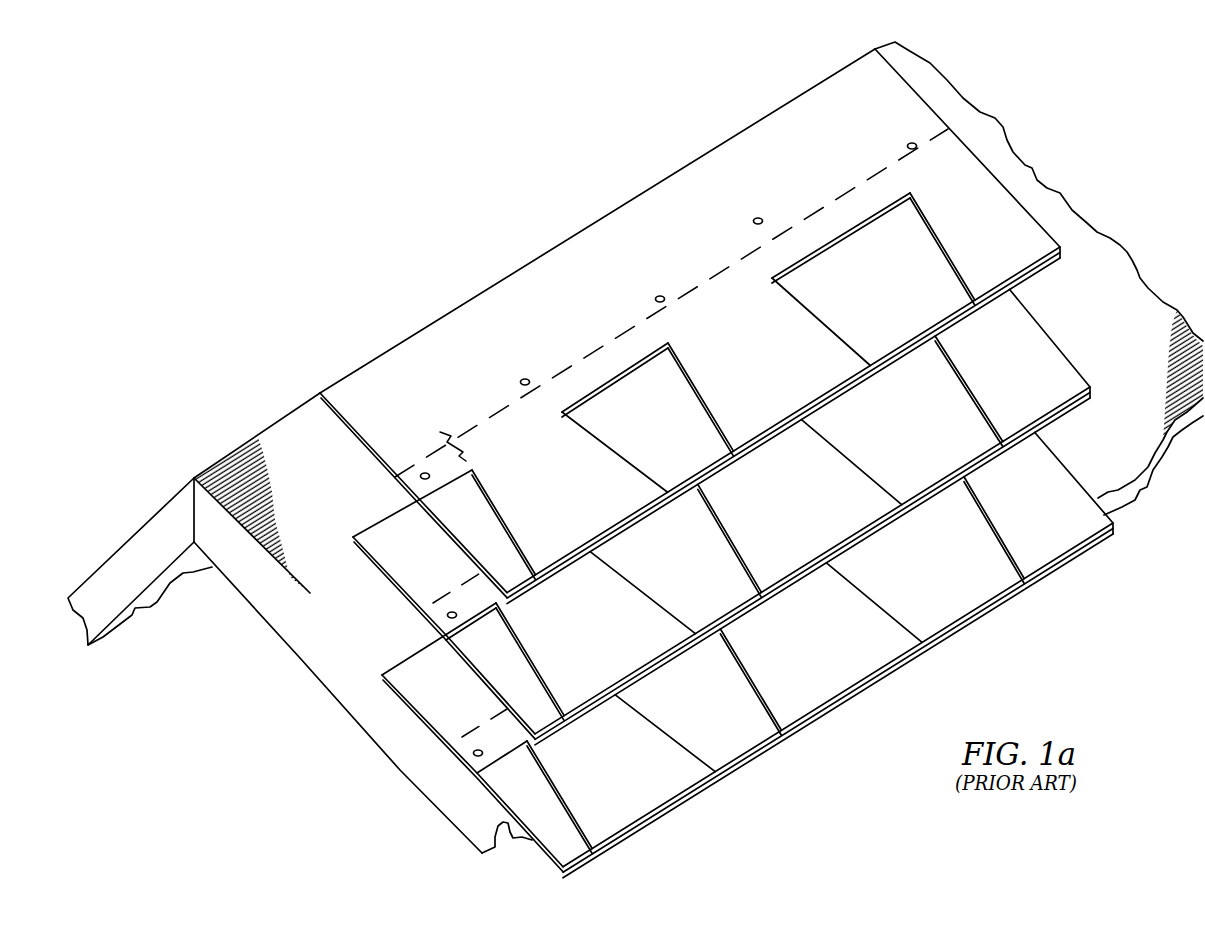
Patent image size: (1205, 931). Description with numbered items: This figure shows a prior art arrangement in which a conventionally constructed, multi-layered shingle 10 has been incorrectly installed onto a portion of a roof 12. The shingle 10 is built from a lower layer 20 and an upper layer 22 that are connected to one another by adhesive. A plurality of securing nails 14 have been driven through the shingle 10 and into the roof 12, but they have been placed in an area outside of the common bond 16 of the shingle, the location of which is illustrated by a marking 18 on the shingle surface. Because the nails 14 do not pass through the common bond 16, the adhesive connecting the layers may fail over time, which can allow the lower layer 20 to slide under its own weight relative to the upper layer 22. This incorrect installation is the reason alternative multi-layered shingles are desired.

The multi-layered shingle 10 is at (683, 323).
The roof 12 is at (277, 453).
The securing nails 14 is at (522, 378).
The common bond 16 is at (455, 431).
The marking 18 is at (945, 137).
The lower layer 20 is at (453, 513).
The upper layer 22 is at (352, 410).